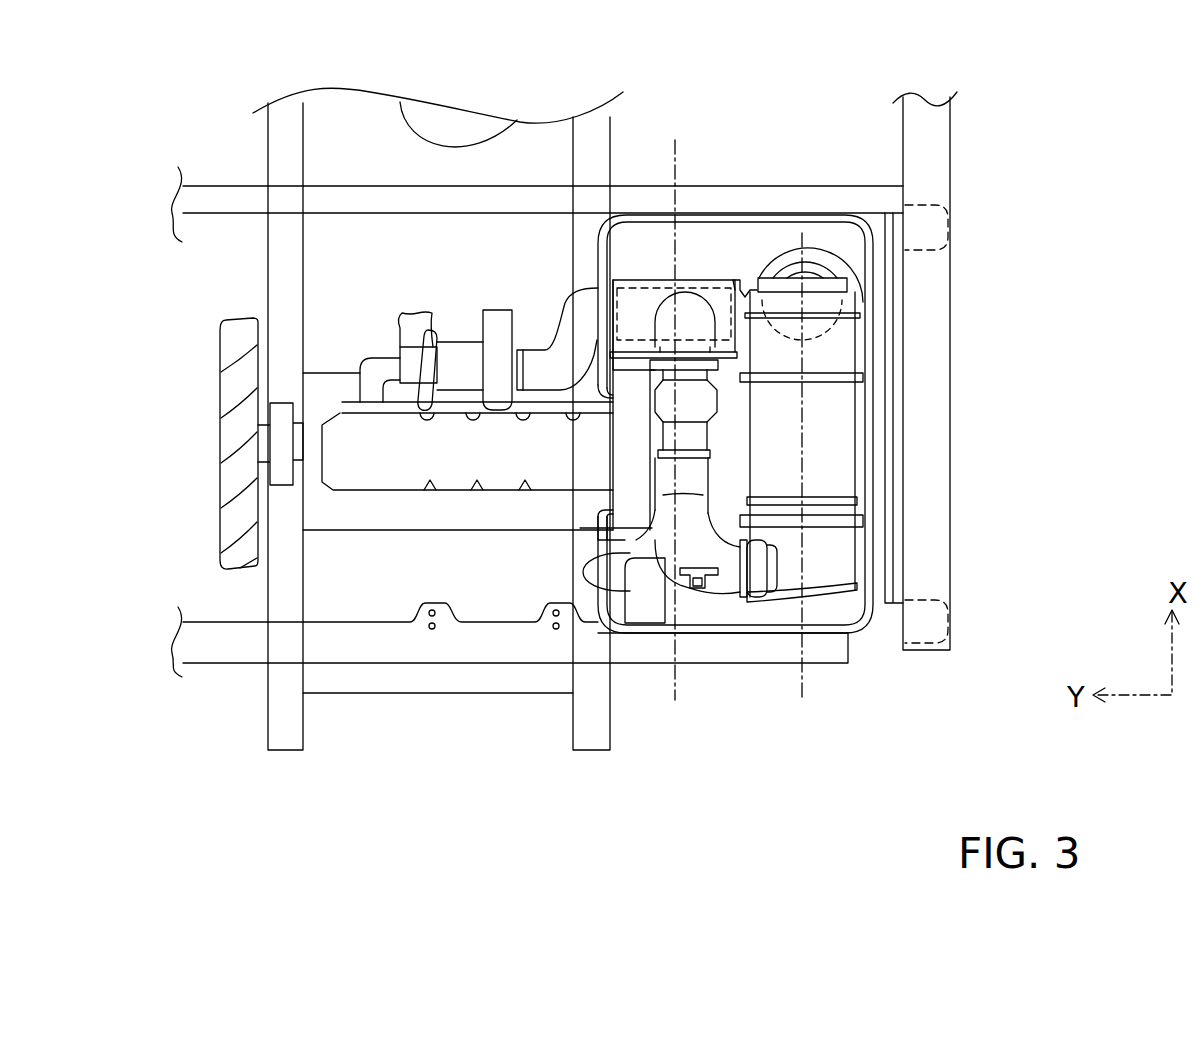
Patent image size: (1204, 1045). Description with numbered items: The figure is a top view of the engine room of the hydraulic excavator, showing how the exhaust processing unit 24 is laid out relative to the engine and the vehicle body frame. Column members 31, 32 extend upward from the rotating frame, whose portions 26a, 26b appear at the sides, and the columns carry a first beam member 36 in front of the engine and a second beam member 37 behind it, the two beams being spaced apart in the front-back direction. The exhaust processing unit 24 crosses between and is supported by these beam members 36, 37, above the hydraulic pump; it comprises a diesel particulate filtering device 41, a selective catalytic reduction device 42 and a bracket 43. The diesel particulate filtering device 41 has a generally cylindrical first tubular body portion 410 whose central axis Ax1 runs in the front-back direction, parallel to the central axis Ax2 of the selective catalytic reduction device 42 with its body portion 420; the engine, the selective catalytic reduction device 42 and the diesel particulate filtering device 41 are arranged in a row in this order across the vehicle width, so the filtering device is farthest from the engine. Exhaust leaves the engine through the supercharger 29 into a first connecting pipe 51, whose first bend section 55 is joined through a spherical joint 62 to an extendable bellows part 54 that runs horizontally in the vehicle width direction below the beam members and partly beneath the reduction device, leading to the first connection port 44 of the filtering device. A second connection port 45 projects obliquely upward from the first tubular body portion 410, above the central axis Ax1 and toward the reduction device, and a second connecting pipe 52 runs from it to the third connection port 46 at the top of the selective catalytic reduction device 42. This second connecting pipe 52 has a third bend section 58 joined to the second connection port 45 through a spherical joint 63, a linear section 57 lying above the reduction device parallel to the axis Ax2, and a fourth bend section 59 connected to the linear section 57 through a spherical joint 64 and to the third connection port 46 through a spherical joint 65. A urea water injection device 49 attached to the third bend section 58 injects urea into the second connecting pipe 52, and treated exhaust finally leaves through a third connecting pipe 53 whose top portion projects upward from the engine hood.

The exhaust processing unit 24 is at (727, 247).
The left frame member 26a is at (283, 128).
The right frame member 26b is at (587, 117).
The supercharger 29 is at (467, 370).
The column member 31 is at (958, 628).
The column member 32 is at (958, 228).
The first beam member 36 is at (352, 193).
The second beam member 37 is at (537, 627).
The diesel particulate filtering device 41 is at (863, 535).
The first tubular body portion 410 is at (850, 507).
The selective catalytic reduction device 42 is at (603, 477).
The exhaust connecting duct 420 is at (635, 442).
The bracket 43 is at (770, 237).
The first connection port 44 is at (810, 277).
The second connection port 45 is at (793, 560).
The third connection port 46 is at (722, 294).
The urea water injection device 49 is at (697, 577).
The first connecting pipe 51 is at (566, 287).
The second connecting pipe 52 is at (724, 438).
The third connecting pipe 53 is at (640, 615).
The bellows part 54 is at (635, 287).
The first bend section 55 is at (553, 312).
The linear section 57 is at (705, 398).
The third bend section 58 is at (723, 580).
The fourth bend section 59 is at (692, 320).
The spherical joint 62 is at (503, 312).
The spherical joint 63 is at (763, 570).
The spherical joint 64 is at (740, 356).
The spherical joint 65 is at (663, 297).
The central axis of the diesel particulate filtering device Ax1 is at (803, 680).
The central axis of the selective catalytic reduction device Ax2 is at (670, 683).